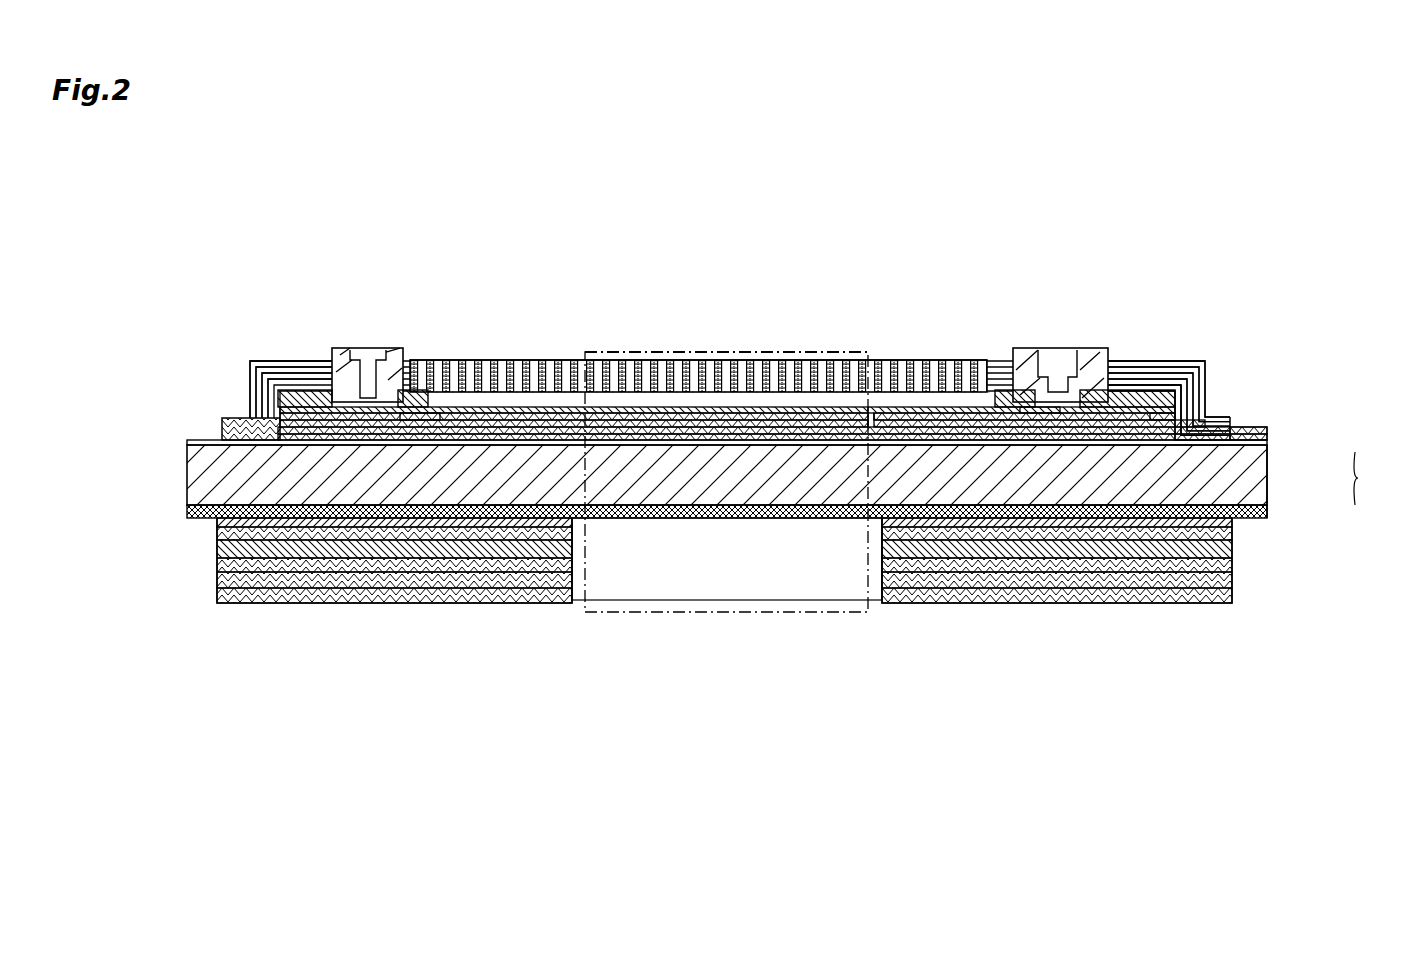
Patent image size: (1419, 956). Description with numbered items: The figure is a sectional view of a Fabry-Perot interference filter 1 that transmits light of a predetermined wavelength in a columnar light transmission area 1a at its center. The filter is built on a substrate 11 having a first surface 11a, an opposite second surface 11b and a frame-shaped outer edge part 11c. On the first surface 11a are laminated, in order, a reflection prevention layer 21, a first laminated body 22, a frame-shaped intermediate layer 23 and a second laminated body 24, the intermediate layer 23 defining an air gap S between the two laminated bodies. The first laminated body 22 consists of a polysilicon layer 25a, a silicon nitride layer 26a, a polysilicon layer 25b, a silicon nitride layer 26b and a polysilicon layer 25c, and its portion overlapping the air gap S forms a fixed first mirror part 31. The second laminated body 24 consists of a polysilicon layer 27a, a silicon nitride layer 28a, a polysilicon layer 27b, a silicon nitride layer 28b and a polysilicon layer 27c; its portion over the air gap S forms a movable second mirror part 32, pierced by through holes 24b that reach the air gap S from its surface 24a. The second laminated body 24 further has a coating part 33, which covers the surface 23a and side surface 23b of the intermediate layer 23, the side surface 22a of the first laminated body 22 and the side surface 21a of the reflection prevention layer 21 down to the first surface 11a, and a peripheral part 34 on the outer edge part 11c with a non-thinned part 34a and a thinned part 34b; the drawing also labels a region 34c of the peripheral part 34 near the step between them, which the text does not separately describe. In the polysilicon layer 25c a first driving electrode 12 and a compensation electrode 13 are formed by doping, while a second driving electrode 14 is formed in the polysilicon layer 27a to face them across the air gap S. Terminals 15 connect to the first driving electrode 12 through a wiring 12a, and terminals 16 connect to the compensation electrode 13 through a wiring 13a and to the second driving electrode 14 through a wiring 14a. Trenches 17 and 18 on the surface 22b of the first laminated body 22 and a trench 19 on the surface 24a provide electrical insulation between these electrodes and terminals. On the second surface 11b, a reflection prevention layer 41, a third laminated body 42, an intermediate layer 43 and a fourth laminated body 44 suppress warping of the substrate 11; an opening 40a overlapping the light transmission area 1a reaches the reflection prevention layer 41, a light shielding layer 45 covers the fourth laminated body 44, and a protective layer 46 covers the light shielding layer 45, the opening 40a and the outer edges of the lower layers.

The Fabry-Perot interference filter 1 is at (944, 256).
The light transmission area 1a is at (772, 613).
The substrate 11 is at (200, 472).
The first surface 11a is at (205, 442).
The second surface 11b is at (200, 512).
The outer edge part 11c is at (1268, 496).
The first driving electrode 12 is at (942, 414).
The wiring 12a is at (422, 420).
The compensation electrode 13 is at (735, 408).
The wiring 13a is at (1035, 414).
The second driving electrode 14 is at (522, 360).
The wiring 14a is at (998, 362).
The terminal 15 is at (368, 348).
The terminal 16 is at (1060, 348).
The trench 17 is at (1095, 390).
The trench 18 is at (869, 408).
The trench 19 is at (322, 390).
The reflection prevention layer 21 is at (1105, 421).
The side surface 21a is at (1168, 423).
The first laminated body 22 is at (92, 262).
The side surface 22a is at (1198, 432).
The surface 22b is at (822, 420).
The intermediate layer 23 is at (1170, 362).
The surface 23a is at (1140, 362).
The side surface 23b is at (1197, 378).
The second laminated body 24 is at (1376, 265).
The surface 24a is at (283, 362).
The through hole 24b is at (620, 358).
The polysilicon layer 25a is at (240, 428).
The polysilicon layer 25b is at (264, 418).
The polysilicon layer 25c is at (252, 410).
The silicon nitride layer 26a is at (270, 422).
The silicon nitride layer 26b is at (258, 414).
The polysilicon layer 27a is at (1232, 438).
The polysilicon layer 27b is at (1232, 428).
The polysilicon layer 27c is at (1232, 418).
The silicon nitride layer 28a is at (1232, 433).
The silicon nitride layer 28b is at (1232, 423).
The first mirror part 31 is at (705, 522).
The second mirror part 32 is at (703, 356).
The coating part 33 is at (1184, 356).
The peripheral part 34 is at (1377, 478).
The non-thinned part 34a is at (1217, 446).
The thinned part 34b is at (1253, 446).
The bonding layer exposed portion 34c is at (1218, 414).
The opening 40a is at (880, 562).
The reflection prevention layer 41 is at (1236, 524).
The third laminated body 42 is at (1236, 534).
The intermediate layer 43 is at (1236, 549).
The fourth laminated body 44 is at (1236, 565).
The light shielding layer 45 is at (1236, 580).
The protective layer 46 is at (1236, 596).
The air gap S is at (700, 398).